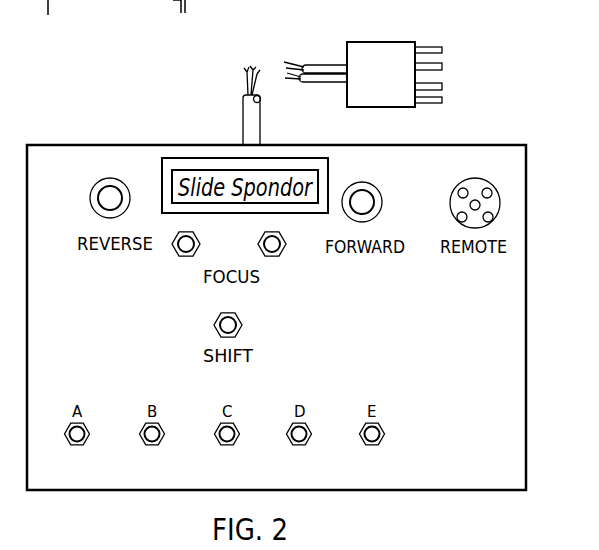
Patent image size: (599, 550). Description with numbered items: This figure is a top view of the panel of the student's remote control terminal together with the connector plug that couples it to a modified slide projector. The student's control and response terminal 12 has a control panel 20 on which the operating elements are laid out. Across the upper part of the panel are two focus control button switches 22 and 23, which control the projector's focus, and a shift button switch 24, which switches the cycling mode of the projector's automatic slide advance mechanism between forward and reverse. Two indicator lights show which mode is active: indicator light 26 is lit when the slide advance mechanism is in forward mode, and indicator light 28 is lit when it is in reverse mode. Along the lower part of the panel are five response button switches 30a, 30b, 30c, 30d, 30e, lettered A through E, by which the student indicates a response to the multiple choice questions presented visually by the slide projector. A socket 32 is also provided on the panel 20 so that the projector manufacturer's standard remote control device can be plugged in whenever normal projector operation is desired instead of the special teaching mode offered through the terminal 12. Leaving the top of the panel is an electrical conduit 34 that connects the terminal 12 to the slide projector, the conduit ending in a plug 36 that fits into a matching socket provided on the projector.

The student's control and response terminal 12 is at (518, 237).
The control panel 20 is at (432, 351).
The focus control button switch 22 is at (179, 256).
The focus control button switch 23 is at (285, 248).
The shift button switch 24 is at (243, 318).
The indicator light 26 is at (368, 188).
The indicator light 28 is at (98, 186).
The response button switch 30a is at (77, 446).
The response button switch 30b is at (152, 446).
The response button switch 30c is at (227, 446).
The response button switch 30d is at (299, 446).
The response button switch 30e is at (372, 446).
The socket 32 is at (478, 182).
The electrical conduit 34 is at (259, 98).
The plug 36 is at (385, 47).